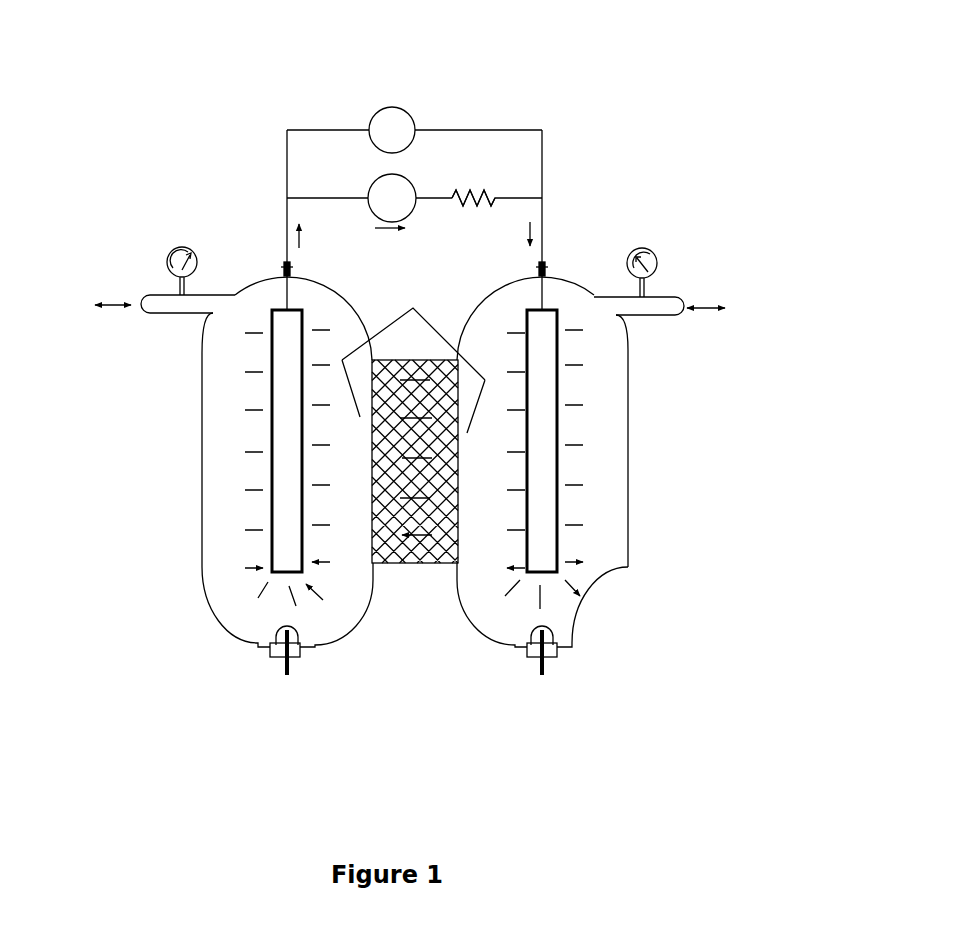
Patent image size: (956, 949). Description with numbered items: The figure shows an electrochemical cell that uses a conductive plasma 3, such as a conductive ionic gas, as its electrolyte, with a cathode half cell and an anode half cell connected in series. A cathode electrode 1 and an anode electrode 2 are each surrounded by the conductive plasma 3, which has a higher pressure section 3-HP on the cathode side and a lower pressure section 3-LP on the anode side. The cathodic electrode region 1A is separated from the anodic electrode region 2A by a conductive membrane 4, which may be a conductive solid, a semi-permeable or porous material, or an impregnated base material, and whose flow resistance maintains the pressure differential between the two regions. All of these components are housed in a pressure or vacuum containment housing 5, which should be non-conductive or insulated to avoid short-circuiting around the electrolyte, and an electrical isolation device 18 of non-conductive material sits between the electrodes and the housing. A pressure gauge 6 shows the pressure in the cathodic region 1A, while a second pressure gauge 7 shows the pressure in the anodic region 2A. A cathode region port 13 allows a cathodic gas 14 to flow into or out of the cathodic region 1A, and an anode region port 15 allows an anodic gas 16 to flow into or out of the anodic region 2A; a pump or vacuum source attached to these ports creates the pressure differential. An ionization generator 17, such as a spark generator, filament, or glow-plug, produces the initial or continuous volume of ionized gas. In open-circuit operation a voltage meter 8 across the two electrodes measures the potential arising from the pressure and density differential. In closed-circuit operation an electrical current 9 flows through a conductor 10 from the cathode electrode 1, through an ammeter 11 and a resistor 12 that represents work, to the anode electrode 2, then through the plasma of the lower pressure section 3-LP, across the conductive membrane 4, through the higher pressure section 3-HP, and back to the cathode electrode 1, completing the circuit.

The cathode electrode 1 is at (285, 333).
The anode electrode 2 is at (540, 350).
The conductive plasma 3 is at (413, 356).
The conductive membrane 4 is at (395, 550).
The pressure containment housing 5 is at (632, 578).
The pressure gauge 6 is at (158, 260).
The second pressure gauge 7 is at (650, 245).
The voltage meter 8 is at (377, 117).
The electrical current 9 is at (250, 593).
The conductor 10 is at (285, 222).
The ammeter 11 is at (413, 188).
The resistor 12 is at (482, 190).
The cathode region port 13 is at (177, 313).
The cathodic gas 14 is at (122, 313).
The anode region port 15 is at (650, 315).
The anodic gas 16 is at (723, 298).
The ionization generator 17 is at (302, 667).
The electrical isolation device 18 is at (542, 267).
The cathodic electrode region 1A is at (230, 468).
The anodic electrode region 2A is at (613, 433).
The higher pressure section 3-HP is at (230, 558).
The lower pressure section 3-LP is at (613, 524).